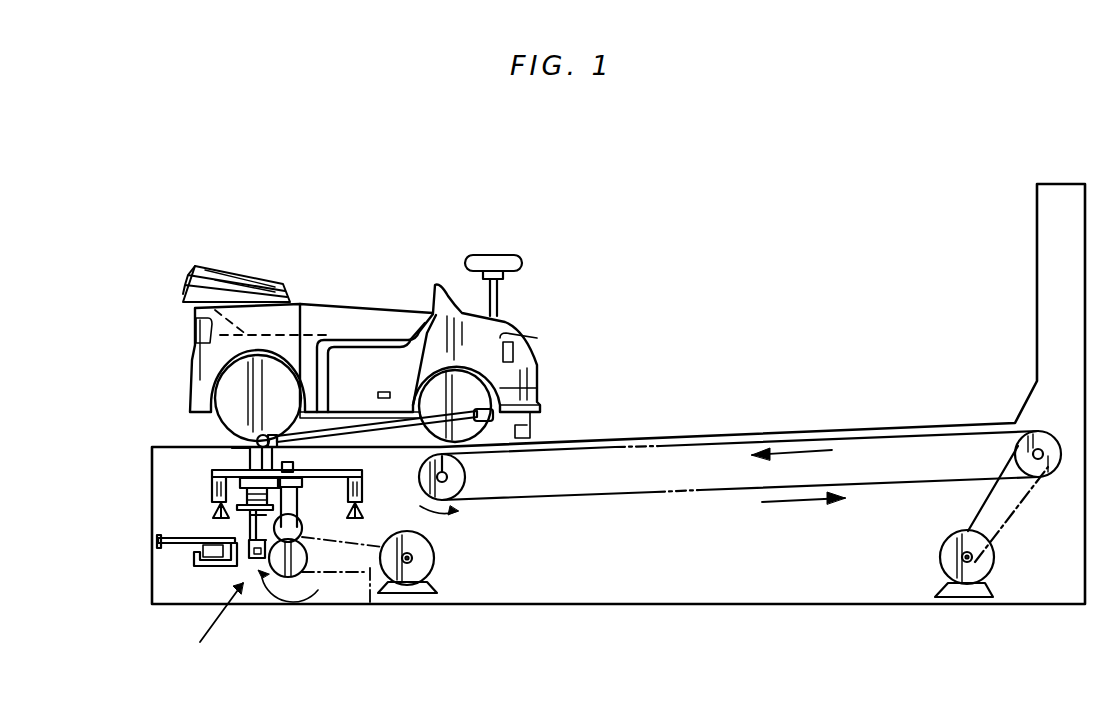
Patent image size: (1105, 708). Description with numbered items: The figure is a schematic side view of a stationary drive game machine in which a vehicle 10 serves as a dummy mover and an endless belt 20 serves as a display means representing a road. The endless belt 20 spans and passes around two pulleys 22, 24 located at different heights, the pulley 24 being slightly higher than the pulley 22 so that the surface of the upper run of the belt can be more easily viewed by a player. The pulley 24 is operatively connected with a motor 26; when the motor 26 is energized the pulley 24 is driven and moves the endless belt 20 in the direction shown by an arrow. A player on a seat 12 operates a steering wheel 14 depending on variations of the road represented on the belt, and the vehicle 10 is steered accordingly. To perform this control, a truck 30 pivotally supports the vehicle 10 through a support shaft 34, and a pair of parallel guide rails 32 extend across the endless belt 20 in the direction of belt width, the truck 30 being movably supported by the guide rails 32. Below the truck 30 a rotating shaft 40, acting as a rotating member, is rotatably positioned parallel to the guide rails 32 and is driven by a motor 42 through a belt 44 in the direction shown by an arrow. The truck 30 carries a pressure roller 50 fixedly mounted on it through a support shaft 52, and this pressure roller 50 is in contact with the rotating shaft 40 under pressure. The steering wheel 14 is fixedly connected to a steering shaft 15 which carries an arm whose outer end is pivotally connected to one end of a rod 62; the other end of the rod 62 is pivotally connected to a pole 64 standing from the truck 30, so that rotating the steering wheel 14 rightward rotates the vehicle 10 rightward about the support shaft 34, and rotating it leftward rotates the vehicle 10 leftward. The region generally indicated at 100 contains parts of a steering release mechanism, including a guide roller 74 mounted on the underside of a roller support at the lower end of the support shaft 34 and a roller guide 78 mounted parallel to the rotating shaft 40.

The vehicle 10 is at (388, 318).
The seat 12 is at (215, 262).
The steering wheel 14 is at (522, 262).
The steering shaft 15 is at (498, 308).
The endless belt 20 is at (677, 443).
The pulley 22 is at (456, 498).
The pulley 24 is at (1042, 478).
The motor 26 is at (995, 556).
The truck 30 is at (232, 456).
The guide rails 32 is at (357, 516).
The support shaft 34 is at (256, 441).
The rotating shaft 40 is at (288, 578).
The motor 42 is at (420, 566).
The belt 44 is at (373, 578).
The pressure roller 50 is at (302, 528).
The support shaft 52 is at (298, 498).
The rod 62 is at (368, 428).
The pole 64 is at (364, 472).
The guide roller 74 is at (250, 562).
The roller guide 78 is at (192, 552).
The parts of the steering release mechanism 100 is at (201, 628).